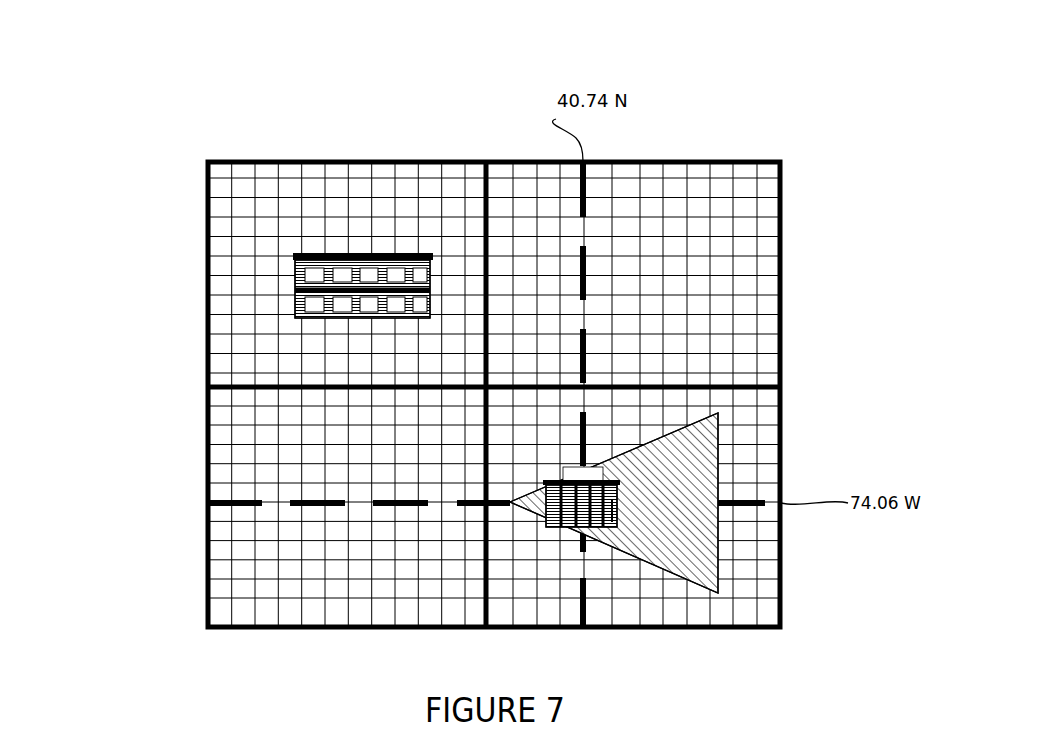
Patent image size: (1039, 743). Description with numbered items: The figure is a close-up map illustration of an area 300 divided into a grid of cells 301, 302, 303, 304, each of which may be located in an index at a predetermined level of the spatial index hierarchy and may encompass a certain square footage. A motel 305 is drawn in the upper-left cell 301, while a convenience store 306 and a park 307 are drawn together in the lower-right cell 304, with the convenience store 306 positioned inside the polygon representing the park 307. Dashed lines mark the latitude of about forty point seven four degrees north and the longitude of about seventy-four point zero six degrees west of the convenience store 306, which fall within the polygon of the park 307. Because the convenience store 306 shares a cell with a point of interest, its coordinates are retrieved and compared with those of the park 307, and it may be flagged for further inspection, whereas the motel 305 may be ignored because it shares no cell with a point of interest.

The area 300 is at (118, 80).
The cell 301 is at (207, 163).
The cell 302 is at (207, 627).
The cell 303 is at (780, 162).
The cell 304 is at (780, 627).
The motel 305 is at (347, 253).
The convenience store 306 is at (580, 466).
The park 307 is at (720, 566).